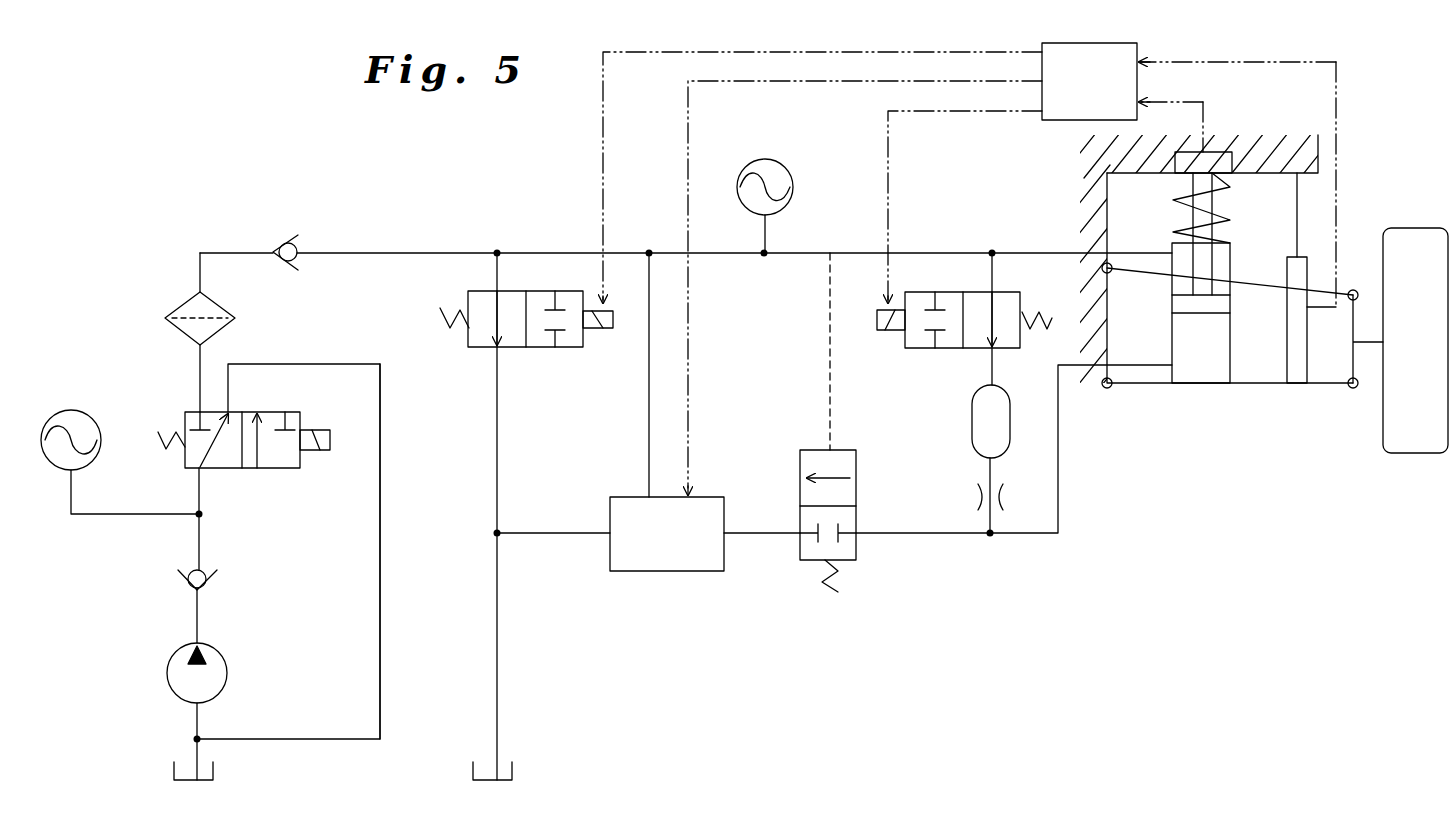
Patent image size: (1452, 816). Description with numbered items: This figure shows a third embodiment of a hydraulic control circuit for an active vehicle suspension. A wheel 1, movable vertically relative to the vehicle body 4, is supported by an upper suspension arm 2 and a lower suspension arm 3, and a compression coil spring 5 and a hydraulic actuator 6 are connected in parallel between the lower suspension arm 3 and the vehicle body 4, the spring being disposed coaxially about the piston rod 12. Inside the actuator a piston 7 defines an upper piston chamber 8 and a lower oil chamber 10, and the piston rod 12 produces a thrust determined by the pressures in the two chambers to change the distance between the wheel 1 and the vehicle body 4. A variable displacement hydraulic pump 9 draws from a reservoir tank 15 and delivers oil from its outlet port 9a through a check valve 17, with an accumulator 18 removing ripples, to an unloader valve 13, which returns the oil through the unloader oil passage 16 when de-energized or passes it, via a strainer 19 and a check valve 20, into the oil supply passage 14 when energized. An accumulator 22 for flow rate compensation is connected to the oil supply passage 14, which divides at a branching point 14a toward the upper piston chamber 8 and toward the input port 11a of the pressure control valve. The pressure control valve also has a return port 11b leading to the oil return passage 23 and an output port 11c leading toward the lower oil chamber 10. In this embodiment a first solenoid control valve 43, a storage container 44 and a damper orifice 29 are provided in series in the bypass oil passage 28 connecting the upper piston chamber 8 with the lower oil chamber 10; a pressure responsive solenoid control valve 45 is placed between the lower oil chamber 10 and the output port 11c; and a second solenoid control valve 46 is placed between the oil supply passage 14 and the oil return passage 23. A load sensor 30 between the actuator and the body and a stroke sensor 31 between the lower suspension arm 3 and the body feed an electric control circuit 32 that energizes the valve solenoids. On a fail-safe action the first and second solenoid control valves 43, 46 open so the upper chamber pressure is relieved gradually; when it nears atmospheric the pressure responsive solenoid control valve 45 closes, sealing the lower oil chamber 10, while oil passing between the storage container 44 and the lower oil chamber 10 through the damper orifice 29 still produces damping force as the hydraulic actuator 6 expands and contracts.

The wheel 1 is at (1416, 228).
The upper suspension arm 2 is at (1318, 290).
The lower suspension arm 3 is at (1335, 388).
The vehicle body 4 is at (1318, 150).
The compression coil spring 5 is at (1235, 212).
The hydraulic actuator 6 is at (1240, 360).
The piston 7 is at (1225, 305).
The upper piston chamber 8 is at (1222, 270).
The variable displacement hydraulic pump 9 is at (214, 697).
The outlet port 9a is at (200, 647).
The lower oil chamber 10 is at (1218, 362).
The input port 11a is at (648, 495).
The return port 11b is at (608, 530).
The output port 11c is at (727, 535).
The piston rod 12 is at (1183, 216).
The unloader valve 13 is at (283, 470).
The oil supply passage 14 is at (572, 250).
The branching point 14a is at (650, 252).
The reservoir tank 15 is at (215, 770).
The unloader oil passage 16 is at (380, 648).
The check valve 17 is at (182, 595).
The accumulator 18 is at (100, 432).
The strainer 19 is at (178, 310).
The check valve 20 is at (288, 262).
The accumulator 22 is at (790, 165).
The oil return passage 23 is at (553, 537).
The bypass oil passage 28 is at (993, 368).
The damper orifice 29 is at (972, 497).
The load sensor 30 is at (1240, 150).
The stroke sensor 31 is at (1297, 378).
The electric control circuit 32 is at (1075, 43).
The first solenoid control valve 43 is at (945, 348).
The storage container 44 is at (972, 436).
The pressure responsive solenoid control valve 45 is at (858, 500).
The second solenoid control valve 46 is at (545, 348).